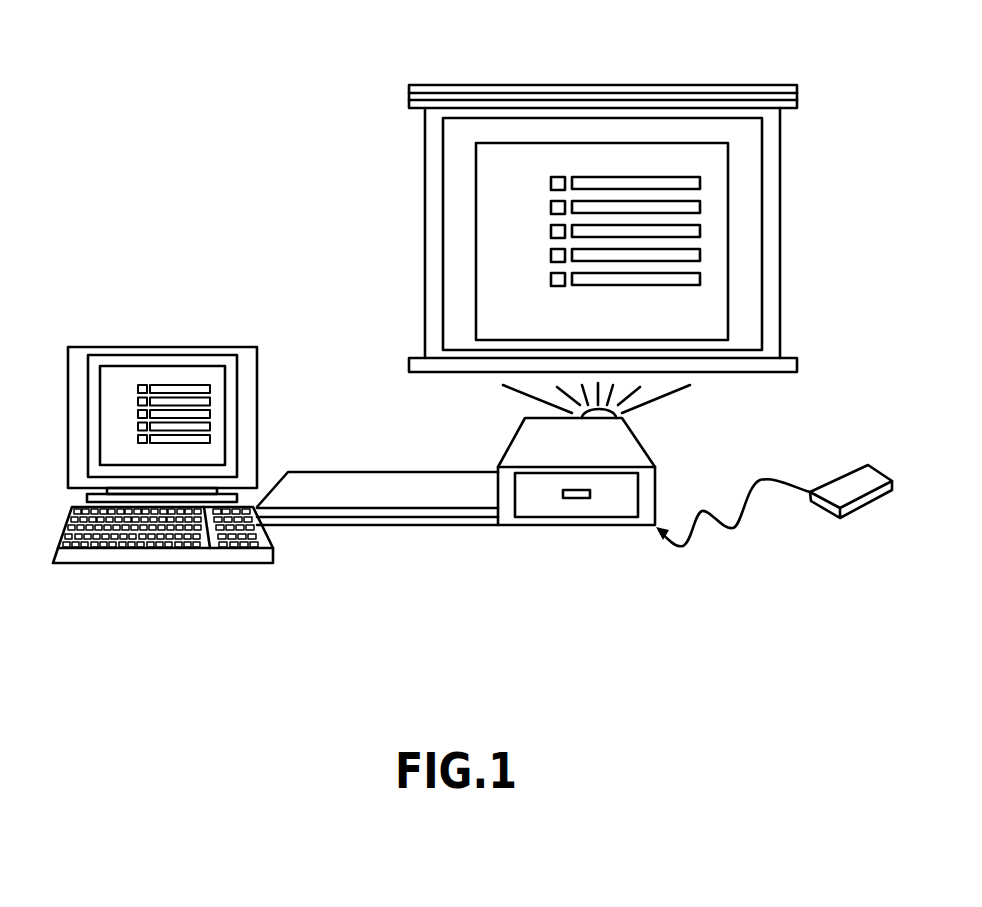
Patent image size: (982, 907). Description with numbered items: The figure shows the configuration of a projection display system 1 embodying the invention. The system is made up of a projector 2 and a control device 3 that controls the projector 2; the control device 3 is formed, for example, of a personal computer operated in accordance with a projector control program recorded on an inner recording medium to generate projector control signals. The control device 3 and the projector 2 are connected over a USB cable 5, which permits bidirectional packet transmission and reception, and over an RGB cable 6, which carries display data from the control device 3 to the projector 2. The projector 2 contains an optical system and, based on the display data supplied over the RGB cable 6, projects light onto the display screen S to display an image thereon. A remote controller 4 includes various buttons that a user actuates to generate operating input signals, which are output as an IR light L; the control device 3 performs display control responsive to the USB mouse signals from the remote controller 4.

The projection display system 1 is at (224, 197).
The projector 2 is at (567, 517).
The control device 3 is at (155, 347).
The remote controller 4 is at (855, 480).
The USB cable 5 is at (351, 525).
The RGB cable 6 is at (313, 472).
The display screen S is at (571, 84).
The IR light L is at (735, 528).